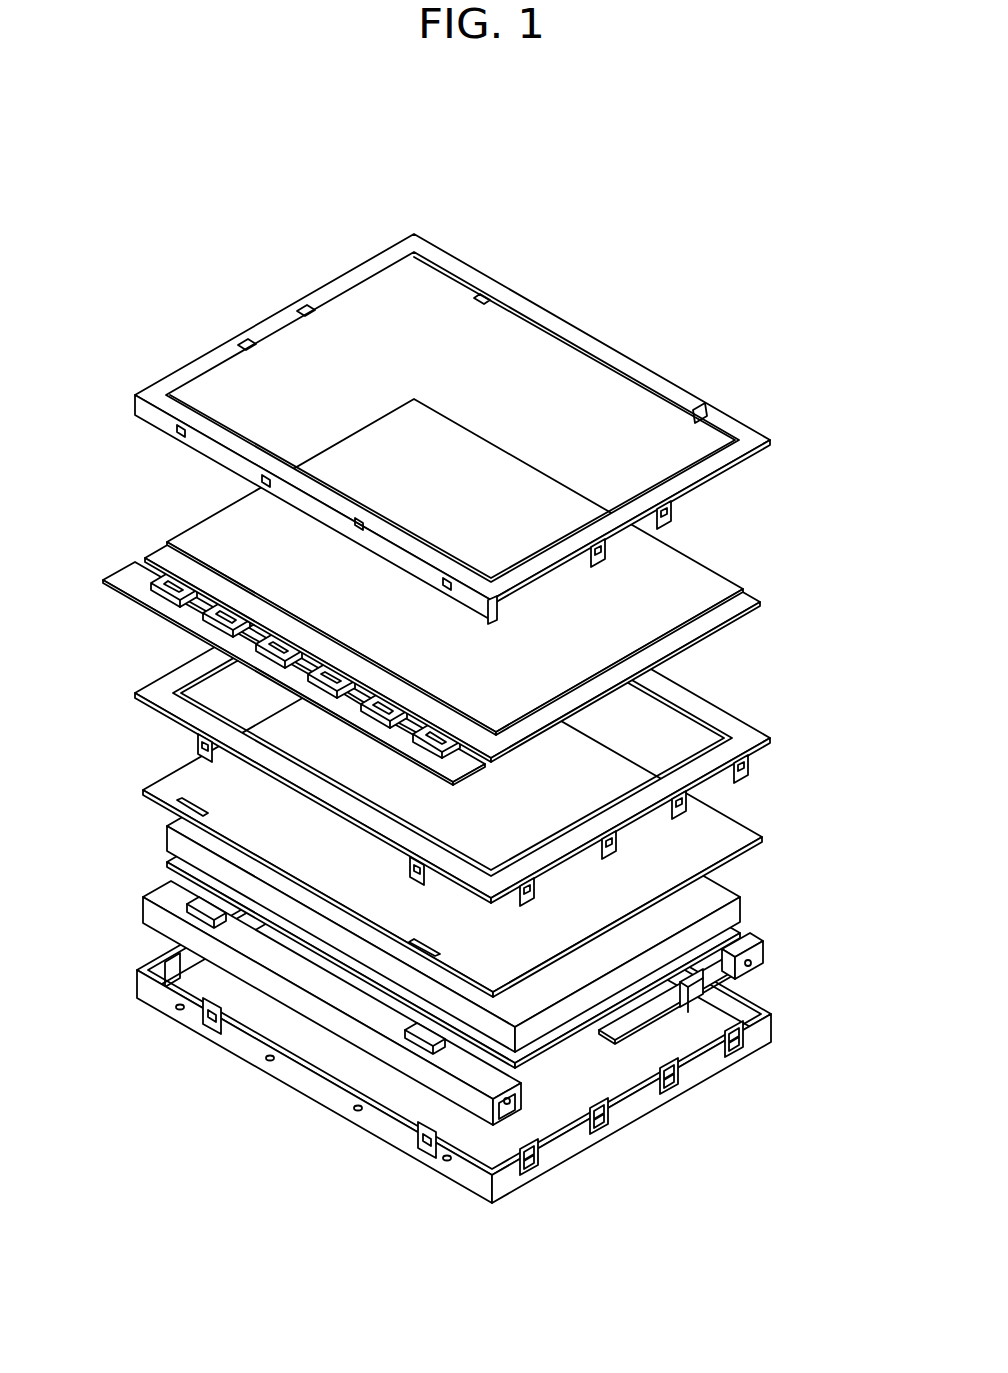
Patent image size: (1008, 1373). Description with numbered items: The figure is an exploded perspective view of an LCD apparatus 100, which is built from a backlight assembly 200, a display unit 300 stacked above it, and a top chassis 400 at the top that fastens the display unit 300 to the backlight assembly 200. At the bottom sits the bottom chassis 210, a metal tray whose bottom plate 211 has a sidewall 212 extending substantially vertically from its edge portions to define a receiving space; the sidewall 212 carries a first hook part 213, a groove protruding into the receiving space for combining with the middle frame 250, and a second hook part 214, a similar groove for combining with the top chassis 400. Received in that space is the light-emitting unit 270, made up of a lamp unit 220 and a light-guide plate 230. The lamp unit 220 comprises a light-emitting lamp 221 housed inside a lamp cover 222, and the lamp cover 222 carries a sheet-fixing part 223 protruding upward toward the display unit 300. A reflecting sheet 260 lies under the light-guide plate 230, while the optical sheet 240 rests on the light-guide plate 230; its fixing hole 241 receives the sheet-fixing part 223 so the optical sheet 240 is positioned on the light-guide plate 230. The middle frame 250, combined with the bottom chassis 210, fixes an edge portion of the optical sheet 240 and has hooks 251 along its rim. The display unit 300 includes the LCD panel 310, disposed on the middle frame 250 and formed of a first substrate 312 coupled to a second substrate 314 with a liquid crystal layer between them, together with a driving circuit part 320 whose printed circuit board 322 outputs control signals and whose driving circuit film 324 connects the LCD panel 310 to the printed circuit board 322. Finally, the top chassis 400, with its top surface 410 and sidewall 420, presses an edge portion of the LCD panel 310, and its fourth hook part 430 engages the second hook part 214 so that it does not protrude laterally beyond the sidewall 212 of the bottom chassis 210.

The LCD apparatus 100 is at (440, 173).
The backlight assembly 200 is at (93, 1005).
The bottom chassis 210 is at (180, 1033).
The bottom plate 211 is at (330, 1057).
The sidewall 212 is at (345, 1097).
The first hook part 213 is at (530, 1163).
The second hook part 214 is at (600, 1128).
The lamp unit 220 is at (804, 966).
The light-emitting lamp 221 is at (742, 968).
The lamp cover 222 is at (735, 994).
The sheet-fixing part 223 is at (230, 912).
The light-guide plate 230 is at (745, 887).
The optical sheet 240 is at (171, 767).
The fixing hole 241 is at (212, 814).
The middle frame 250 is at (168, 661).
The hook 251 is at (200, 750).
The reflecting sheet 260 is at (598, 1010).
The light-emitting unit 270 is at (843, 915).
The display unit 300 is at (717, 567).
The LCD panel 310 is at (790, 628).
The first substrate 312 is at (683, 640).
The second substrate 314 is at (700, 601).
The driving circuit part 320 is at (185, 495).
The printed circuit board 322 is at (122, 572).
The driving circuit film 324 is at (162, 572).
The top chassis 400 is at (718, 399).
The top surface 410 is at (736, 453).
The sidewall 420 is at (134, 411).
The fourth hook part 430 is at (668, 513).